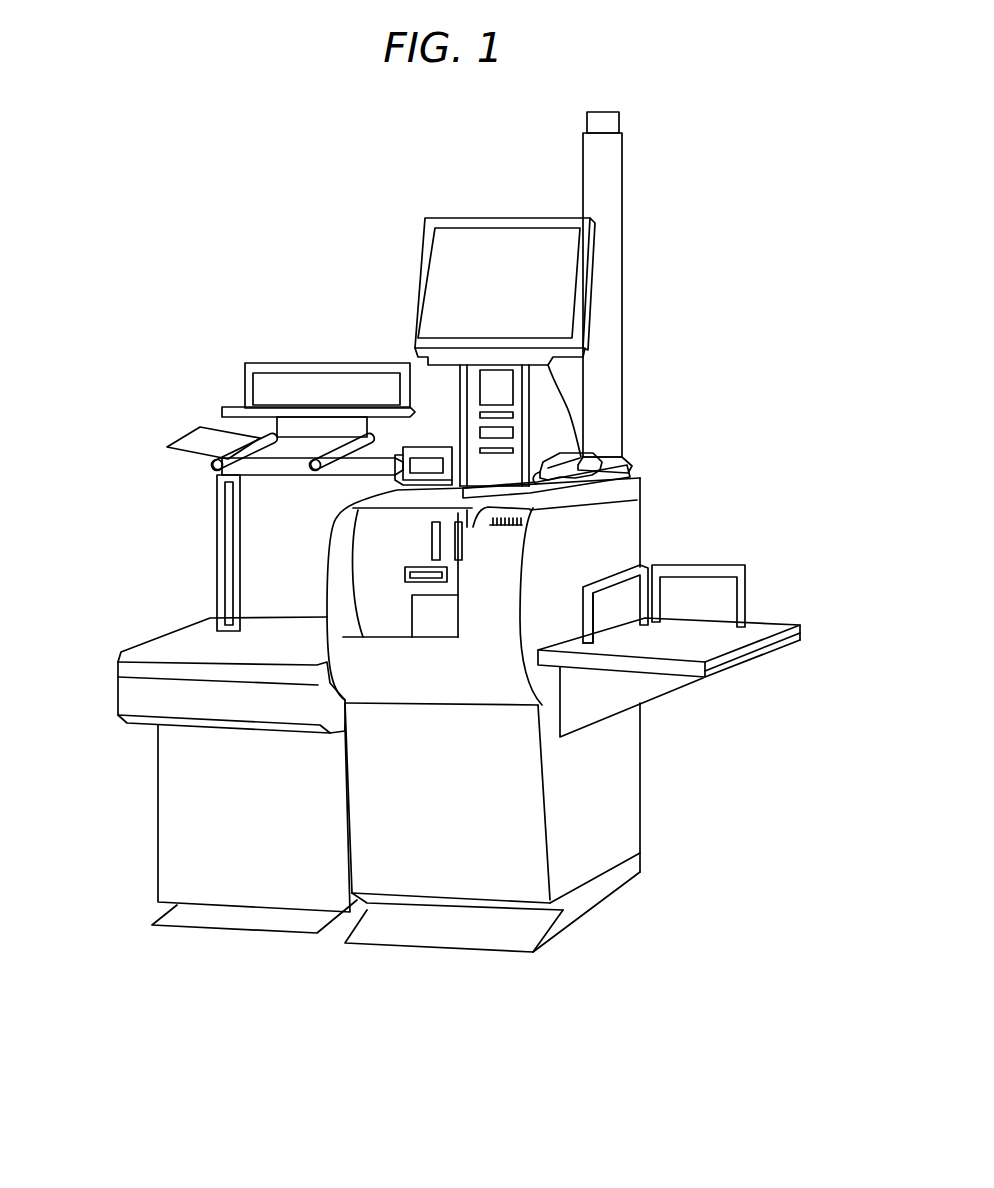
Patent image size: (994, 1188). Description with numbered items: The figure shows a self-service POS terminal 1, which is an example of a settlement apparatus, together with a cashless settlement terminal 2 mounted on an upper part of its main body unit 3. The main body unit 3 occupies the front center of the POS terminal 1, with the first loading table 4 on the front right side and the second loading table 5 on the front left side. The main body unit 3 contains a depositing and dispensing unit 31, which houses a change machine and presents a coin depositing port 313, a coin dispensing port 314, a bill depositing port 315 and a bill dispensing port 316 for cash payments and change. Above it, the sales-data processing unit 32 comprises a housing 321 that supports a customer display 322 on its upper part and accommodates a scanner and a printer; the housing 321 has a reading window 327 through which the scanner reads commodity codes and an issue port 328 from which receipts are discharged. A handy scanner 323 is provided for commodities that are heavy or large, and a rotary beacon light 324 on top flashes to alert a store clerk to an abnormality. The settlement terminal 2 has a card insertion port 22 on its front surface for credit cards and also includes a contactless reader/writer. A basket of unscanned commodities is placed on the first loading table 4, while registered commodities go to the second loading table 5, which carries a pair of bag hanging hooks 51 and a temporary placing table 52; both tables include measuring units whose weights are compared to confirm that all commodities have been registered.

The self-service POS terminal 1 is at (440, 199).
The cashless settlement terminal 2 is at (375, 398).
The card insertion port 22 is at (423, 466).
The main body unit 3 is at (417, 745).
The depositing and dispensing unit 31 is at (465, 684).
The sales-data processing unit 32 is at (623, 413).
The housing 321 is at (553, 440).
The customer display 322 is at (494, 218).
The handy scanner 323 is at (627, 464).
The rotary beacon light 324 is at (612, 150).
The reading window 327 is at (498, 383).
The issue port 328 is at (498, 433).
The coin depositing port 313 is at (500, 507).
The coin dispensing port 314 is at (437, 637).
The bill depositing port 315 is at (460, 557).
The bill dispensing port 316 is at (433, 542).
The first loading table 4 is at (668, 645).
The second loading table 5 is at (188, 645).
The bag hanging hooks 51 is at (205, 449).
The temporary placing table 52 is at (234, 400).